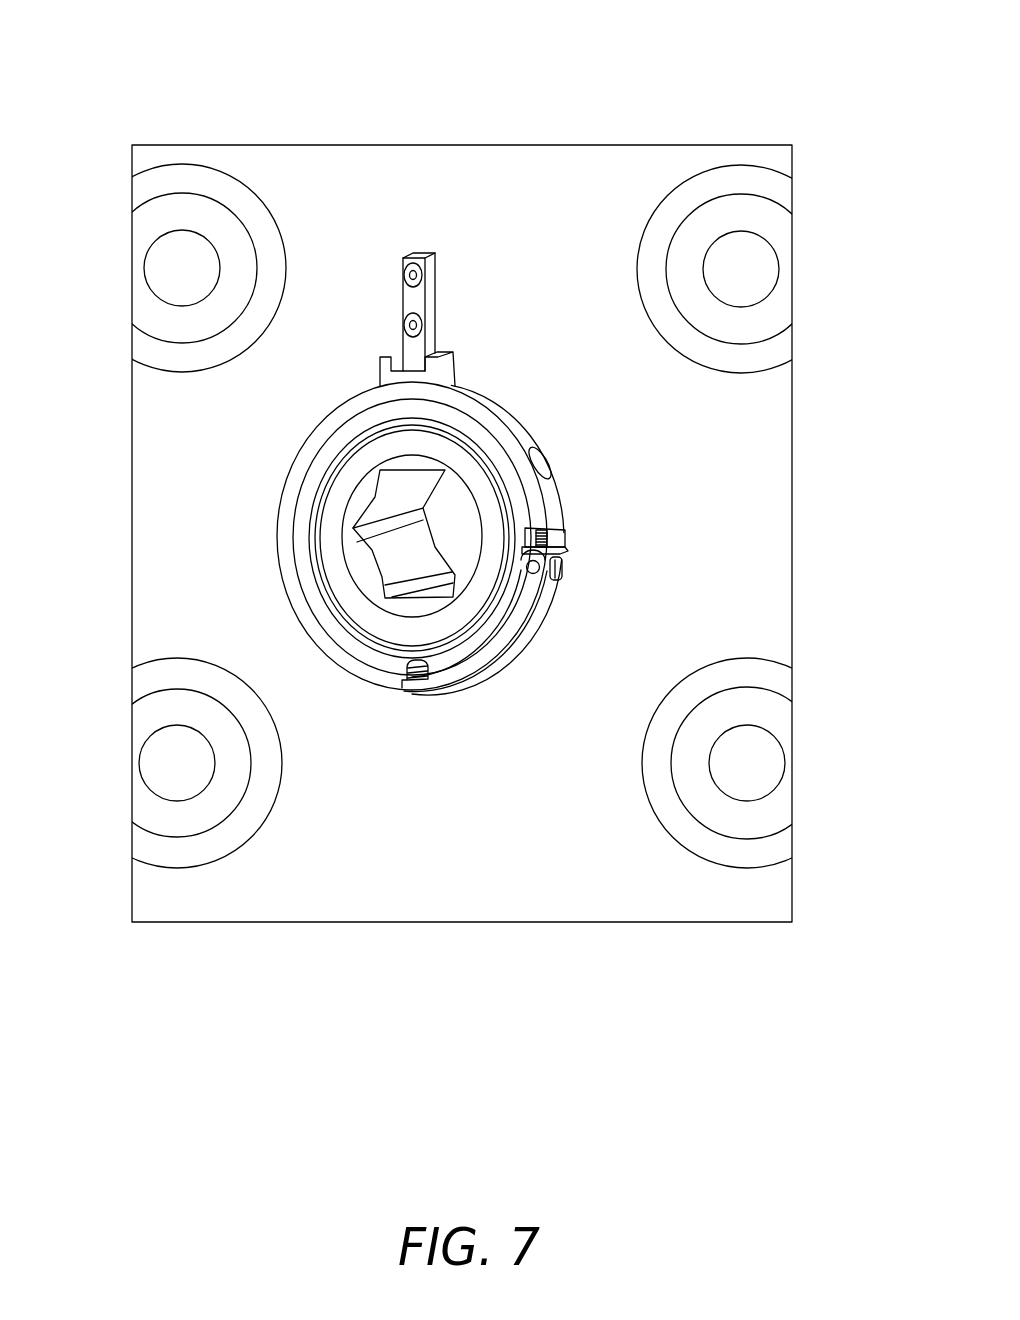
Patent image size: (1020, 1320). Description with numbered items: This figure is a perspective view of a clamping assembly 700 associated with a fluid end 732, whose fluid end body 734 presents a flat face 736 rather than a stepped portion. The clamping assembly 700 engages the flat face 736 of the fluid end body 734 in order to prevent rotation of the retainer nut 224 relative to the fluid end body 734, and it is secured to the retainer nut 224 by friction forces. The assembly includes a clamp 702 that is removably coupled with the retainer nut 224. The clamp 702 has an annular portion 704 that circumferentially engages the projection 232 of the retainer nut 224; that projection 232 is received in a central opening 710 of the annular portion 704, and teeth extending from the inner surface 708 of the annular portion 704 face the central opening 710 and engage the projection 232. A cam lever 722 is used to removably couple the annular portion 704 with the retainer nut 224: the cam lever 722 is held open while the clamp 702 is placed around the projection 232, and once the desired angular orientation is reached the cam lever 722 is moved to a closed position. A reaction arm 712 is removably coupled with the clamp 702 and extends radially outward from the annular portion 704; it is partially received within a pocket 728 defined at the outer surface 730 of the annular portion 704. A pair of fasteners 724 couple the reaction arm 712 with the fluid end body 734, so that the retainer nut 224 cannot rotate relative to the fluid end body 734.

The retainer nut 224 is at (403, 537).
The projection 232 is at (269, 536).
The clamping assembly 700 is at (666, 469).
The clamp 702 is at (637, 622).
The annular portion 704 is at (293, 537).
The inner surface 708 is at (286, 538).
The central opening 710 is at (633, 475).
The reaction arm 712 is at (241, 312).
The cam lever 722 is at (465, 841).
The fasteners 724 is at (646, 310).
The pocket 728 is at (256, 360).
The outer surface 730 is at (297, 536).
The fluid end 732 is at (796, 18).
The fluid end body 734 is at (519, 533).
The flat face 736 is at (741, 225).